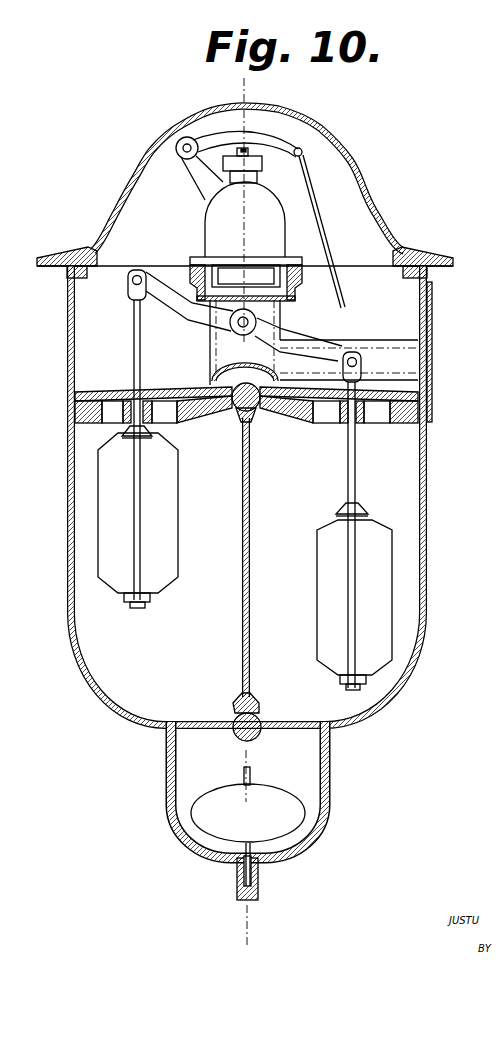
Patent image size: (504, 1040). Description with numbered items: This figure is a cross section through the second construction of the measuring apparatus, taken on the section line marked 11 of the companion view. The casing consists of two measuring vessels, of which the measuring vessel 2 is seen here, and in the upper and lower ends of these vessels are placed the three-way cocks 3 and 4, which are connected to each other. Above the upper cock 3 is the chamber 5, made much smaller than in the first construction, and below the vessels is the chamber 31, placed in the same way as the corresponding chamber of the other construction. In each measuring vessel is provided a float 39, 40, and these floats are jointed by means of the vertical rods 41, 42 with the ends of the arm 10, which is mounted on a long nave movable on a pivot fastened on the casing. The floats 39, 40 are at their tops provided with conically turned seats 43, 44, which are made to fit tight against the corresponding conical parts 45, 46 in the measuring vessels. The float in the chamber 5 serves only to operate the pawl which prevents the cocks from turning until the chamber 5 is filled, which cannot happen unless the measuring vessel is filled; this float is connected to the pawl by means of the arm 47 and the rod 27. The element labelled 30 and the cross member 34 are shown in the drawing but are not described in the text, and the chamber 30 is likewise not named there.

The measuring vessel 2 is at (249, 495).
The three-way cock 3 is at (256, 407).
The three-way cock 4 is at (260, 720).
The chamber 5 is at (205, 232).
The arm 10 is at (203, 312).
The arm 11 is at (256, 88).
The rod 27 is at (332, 248).
The float 30 is at (268, 800).
The chamber 31 is at (330, 765).
The cross arm 34 is at (378, 357).
The float 39 is at (163, 502).
The float 40 is at (373, 530).
The vertical rod 41 is at (133, 343).
The vertical rod 42 is at (347, 468).
The conically turned seat 43 is at (152, 432).
The conically turned seat 44 is at (340, 508).
The conical part 45 is at (122, 423).
The conical part 46 is at (343, 430).
The arm 47 is at (268, 135).